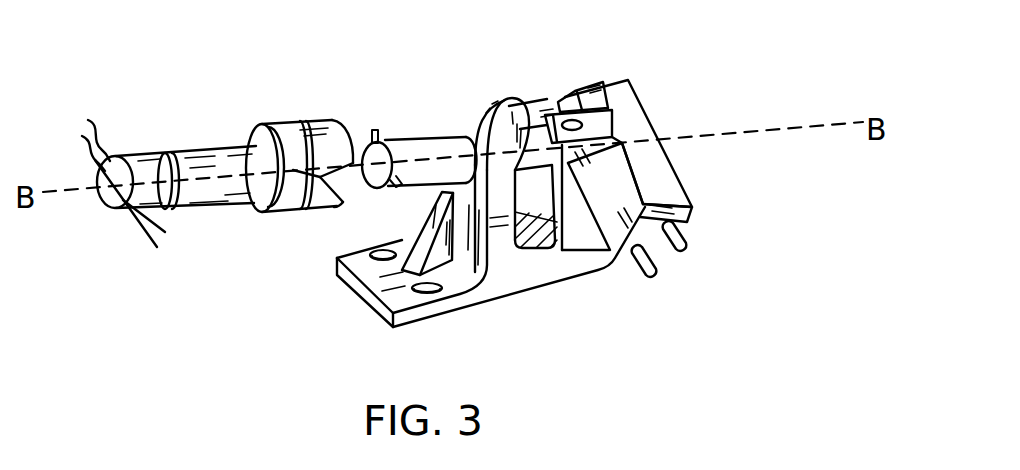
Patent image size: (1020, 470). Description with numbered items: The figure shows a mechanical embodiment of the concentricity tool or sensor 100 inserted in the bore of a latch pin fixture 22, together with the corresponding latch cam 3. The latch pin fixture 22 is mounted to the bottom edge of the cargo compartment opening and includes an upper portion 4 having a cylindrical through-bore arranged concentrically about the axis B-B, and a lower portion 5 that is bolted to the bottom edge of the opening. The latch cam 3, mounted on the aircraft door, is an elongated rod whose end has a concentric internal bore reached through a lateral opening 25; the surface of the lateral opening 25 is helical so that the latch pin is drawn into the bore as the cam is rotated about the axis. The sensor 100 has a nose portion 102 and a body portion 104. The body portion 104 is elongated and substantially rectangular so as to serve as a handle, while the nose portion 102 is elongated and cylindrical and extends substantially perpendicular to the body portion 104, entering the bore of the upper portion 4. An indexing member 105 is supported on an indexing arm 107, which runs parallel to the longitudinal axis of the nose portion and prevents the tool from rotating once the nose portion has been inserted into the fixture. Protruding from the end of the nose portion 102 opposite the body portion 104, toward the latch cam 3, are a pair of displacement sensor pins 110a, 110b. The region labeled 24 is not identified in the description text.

The latch cam 3 is at (302, 133).
The lateral opening 25 is at (335, 127).
The nose portion 102 is at (421, 137).
The displacement sensor pin 110a is at (373, 128).
The displacement sensor pin 110b is at (392, 188).
The lower portion 5 is at (526, 268).
The latch pin fixture 22 is at (428, 295).
The shaft hole 24 is at (477, 118).
The upper portion 4 is at (502, 108).
The concentricity tool or sensor 100 is at (623, 103).
The indexing arm 107 is at (577, 102).
The indexing member 105 is at (585, 123).
The body portion 104 is at (686, 198).